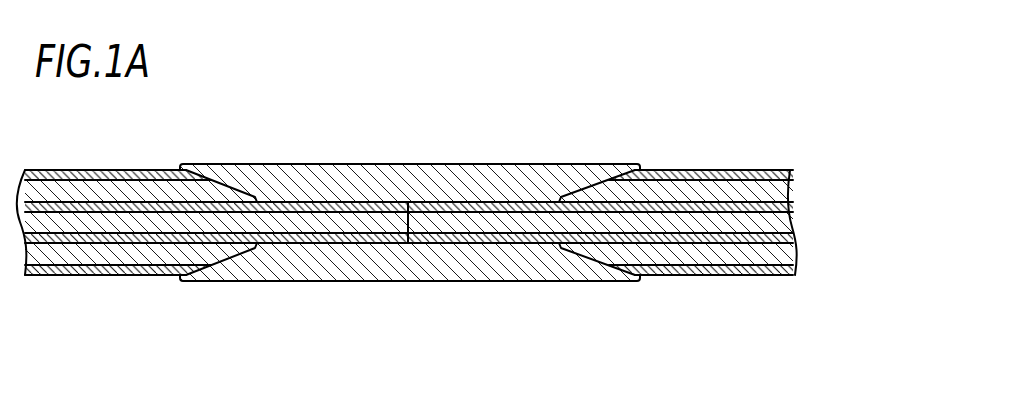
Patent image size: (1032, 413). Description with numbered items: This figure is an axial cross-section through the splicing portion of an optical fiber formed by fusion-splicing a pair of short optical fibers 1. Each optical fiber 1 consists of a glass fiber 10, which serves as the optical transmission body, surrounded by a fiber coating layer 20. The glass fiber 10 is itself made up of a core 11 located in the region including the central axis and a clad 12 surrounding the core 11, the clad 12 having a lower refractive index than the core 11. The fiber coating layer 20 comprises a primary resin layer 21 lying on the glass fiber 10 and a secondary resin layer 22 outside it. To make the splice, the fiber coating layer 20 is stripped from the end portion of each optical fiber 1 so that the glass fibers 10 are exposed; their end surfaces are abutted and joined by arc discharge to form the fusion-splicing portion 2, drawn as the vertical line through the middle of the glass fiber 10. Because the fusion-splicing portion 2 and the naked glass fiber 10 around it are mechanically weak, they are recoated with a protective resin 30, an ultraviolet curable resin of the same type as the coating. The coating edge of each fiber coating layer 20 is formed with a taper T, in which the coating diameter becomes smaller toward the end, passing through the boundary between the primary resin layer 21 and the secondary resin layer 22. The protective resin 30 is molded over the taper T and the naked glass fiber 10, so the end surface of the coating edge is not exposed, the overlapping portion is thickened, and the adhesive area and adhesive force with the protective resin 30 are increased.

The optical fiber 1 is at (478, 212).
The glass fiber 10 is at (459, 231).
The core 11 is at (793, 227).
The clad 12 is at (792, 208).
The fiber coating layer 20 is at (459, 176).
The primary resin layer 21 is at (852, 150).
The secondary resin layer 22 is at (793, 173).
The protective resin 30 is at (421, 176).
The fusion-splicing portion 2 is at (406, 246).
The taper T is at (588, 182).